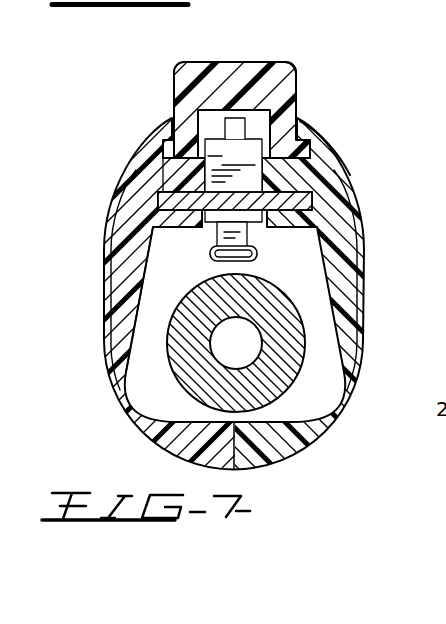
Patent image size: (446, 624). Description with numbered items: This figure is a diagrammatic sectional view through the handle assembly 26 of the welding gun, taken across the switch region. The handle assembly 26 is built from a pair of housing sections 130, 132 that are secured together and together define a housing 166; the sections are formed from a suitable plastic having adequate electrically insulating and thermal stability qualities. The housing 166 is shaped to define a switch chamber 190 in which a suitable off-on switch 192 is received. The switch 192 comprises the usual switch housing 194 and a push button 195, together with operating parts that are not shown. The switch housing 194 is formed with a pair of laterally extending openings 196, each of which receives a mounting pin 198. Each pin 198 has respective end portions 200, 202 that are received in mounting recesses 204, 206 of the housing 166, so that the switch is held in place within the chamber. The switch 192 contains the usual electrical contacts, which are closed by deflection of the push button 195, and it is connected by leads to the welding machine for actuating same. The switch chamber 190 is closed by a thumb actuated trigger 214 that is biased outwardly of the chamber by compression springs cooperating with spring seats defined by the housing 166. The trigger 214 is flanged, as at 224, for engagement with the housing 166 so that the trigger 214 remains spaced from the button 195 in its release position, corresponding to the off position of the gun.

The handle assembly 26 is at (352, 151).
The housing section 130 is at (304, 334).
The housing section 132 is at (120, 372).
The housing 166 is at (360, 192).
The switch chamber 190 is at (263, 132).
The off-on switch 192 is at (250, 157).
The switch housing 194 is at (215, 157).
The push button 195 is at (293, 63).
The laterally extending opening 196 is at (290, 207).
The mounting pin 198 is at (160, 216).
The pin end portion 200 is at (288, 198).
The pin end portion 202 is at (160, 197).
The mounting recess 204 is at (300, 240).
The mounting recess 206 is at (145, 245).
The trigger 214 is at (268, 106).
The flange 224 is at (313, 140).